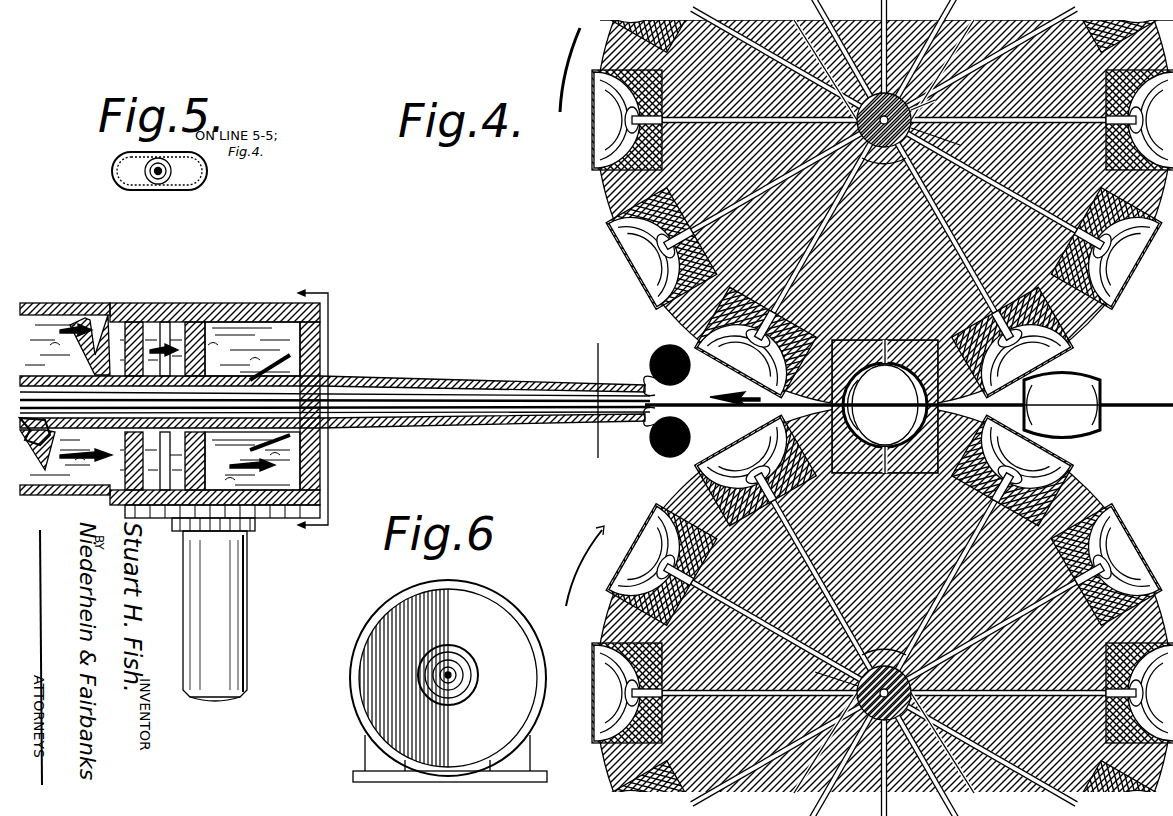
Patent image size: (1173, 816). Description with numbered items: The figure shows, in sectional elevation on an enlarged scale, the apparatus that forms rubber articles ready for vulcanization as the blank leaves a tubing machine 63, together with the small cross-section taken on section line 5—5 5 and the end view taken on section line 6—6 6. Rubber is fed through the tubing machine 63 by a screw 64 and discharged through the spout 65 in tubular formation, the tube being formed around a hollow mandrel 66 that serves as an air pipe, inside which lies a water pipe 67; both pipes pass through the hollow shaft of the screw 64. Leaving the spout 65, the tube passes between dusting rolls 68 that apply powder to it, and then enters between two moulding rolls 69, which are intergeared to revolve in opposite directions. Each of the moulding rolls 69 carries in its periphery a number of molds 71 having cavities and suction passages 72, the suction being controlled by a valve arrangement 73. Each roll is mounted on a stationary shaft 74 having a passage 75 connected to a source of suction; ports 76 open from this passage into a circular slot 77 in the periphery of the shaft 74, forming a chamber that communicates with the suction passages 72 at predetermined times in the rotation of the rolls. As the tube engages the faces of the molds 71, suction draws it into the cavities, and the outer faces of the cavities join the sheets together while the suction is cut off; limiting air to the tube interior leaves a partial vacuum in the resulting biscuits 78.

In FIG. 4, the section line 5— 5 is at (589, 398).
In FIG. 4, the section line 6— 6 is at (306, 416).
In FIG. 4, the tubing machine 63 is at (70, 305).
In FIG. 4, the screw 64 is at (60, 470).
In FIG. 4, the spout 65 is at (505, 380).
In FIG. 4, the hollow mandrel 66 is at (480, 422).
In FIG. 4, the water pipe 67 is at (452, 408).
In FIG. 6, the water pipe 67 is at (460, 677).
In FIG. 4, the dusting rolls 68 is at (658, 358).
In FIG. 4, the moulding rolls 69 is at (899, 406).
In FIG. 4, the molds 71 is at (1080, 632).
In FIG. 4, the suction passages 72 is at (1040, 183).
In FIG. 4, the valve arrangement 73 is at (640, 232).
In FIG. 4, the shaft 74 is at (889, 406).
In FIG. 4, the passage 75 is at (870, 408).
In FIG. 4, the ports 76 is at (858, 116).
In FIG. 4, the circular slot 77 is at (884, 408).
In FIG. 4, the biscuits 78 is at (1090, 428).